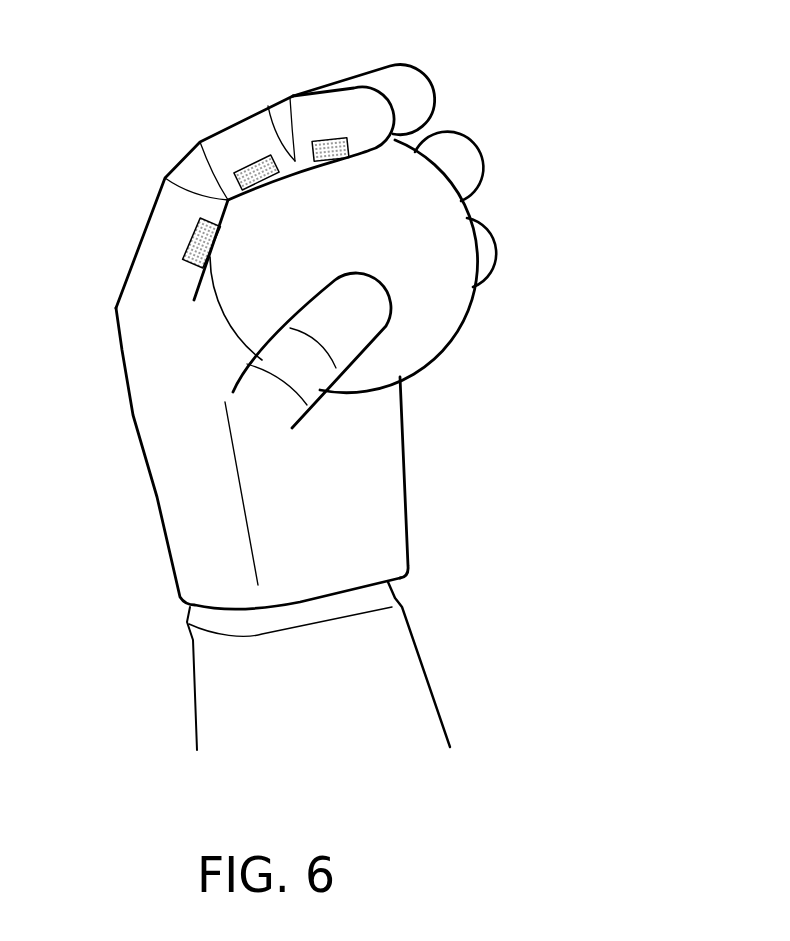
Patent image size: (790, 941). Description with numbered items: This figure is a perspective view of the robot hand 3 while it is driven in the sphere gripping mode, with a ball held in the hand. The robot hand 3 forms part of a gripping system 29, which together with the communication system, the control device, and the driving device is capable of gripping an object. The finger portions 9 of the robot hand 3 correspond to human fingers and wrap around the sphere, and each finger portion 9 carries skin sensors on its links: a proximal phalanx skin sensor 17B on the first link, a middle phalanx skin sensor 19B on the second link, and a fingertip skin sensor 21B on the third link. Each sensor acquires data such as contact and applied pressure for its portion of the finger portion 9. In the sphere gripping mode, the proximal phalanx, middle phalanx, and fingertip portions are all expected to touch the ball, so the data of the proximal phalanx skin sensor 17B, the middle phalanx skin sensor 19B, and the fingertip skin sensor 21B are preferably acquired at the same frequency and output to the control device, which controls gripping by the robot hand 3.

The robot hand 3 is at (133, 420).
The gripping system 29 is at (149, 66).
The finger portions 9 is at (330, 83).
The proximal phalanx skin sensor 17B is at (195, 233).
The middle phalanx skin sensor 19B is at (250, 165).
The fingertip skin sensor 21B is at (330, 138).